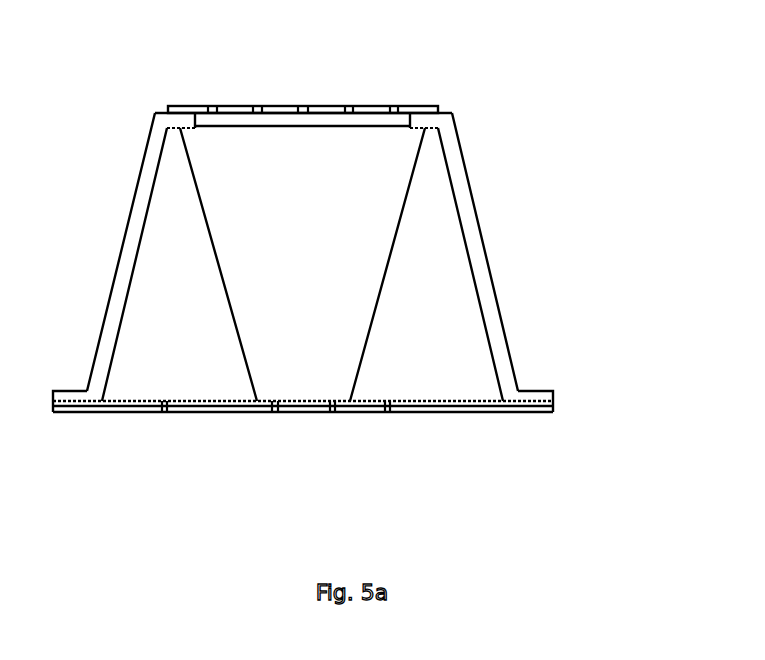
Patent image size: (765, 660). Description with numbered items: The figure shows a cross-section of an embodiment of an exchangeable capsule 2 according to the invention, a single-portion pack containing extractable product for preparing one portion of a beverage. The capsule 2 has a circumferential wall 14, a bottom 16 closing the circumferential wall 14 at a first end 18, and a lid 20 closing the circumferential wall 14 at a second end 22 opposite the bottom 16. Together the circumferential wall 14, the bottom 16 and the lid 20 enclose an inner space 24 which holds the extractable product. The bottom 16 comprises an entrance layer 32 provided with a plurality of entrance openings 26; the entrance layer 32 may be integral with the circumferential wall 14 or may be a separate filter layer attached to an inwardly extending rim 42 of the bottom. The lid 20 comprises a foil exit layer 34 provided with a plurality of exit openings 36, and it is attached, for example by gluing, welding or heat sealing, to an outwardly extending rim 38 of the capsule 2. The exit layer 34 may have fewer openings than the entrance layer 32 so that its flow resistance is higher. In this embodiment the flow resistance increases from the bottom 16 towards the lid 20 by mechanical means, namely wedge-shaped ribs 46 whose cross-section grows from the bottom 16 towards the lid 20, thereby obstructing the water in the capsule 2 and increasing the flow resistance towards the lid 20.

The exchangeable capsule 2 is at (600, 454).
The circumferential wall 14 is at (485, 287).
The bottom 16 is at (422, 112).
The first end 18 is at (447, 133).
The lid 20 is at (514, 414).
The second end 22 is at (510, 386).
The inner space 24 is at (302, 264).
The entrance openings 26 is at (212, 102).
The entrance layer 32 is at (372, 107).
The exit layer 34 is at (88, 414).
The exit openings 36 is at (272, 414).
The outwardly extending rim 38 is at (555, 399).
The inwardly extending rim 42 is at (430, 122).
The wedge-shaped ribs 46 is at (170, 265).